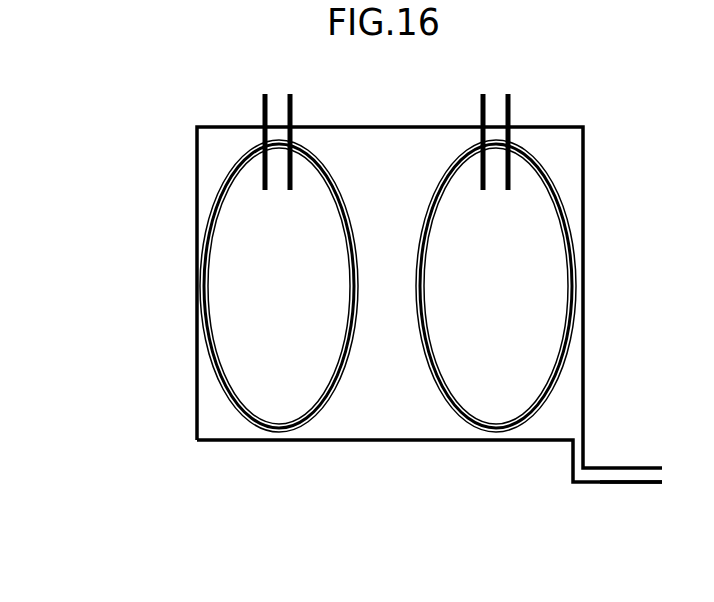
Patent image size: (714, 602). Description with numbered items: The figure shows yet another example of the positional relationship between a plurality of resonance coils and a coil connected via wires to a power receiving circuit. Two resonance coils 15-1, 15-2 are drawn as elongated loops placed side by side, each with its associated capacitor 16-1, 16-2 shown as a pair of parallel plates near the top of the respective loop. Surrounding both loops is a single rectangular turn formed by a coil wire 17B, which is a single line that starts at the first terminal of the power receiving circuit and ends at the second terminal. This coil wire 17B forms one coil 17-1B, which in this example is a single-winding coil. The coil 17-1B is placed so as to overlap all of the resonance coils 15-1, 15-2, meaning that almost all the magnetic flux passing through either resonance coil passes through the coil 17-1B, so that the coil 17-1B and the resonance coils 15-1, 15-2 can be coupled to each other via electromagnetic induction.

The coil 17-1B is at (175, 116).
The resonance coil 15-1 is at (337, 177).
The resonance coil 15-2 is at (552, 177).
The capacitor 16-1 is at (293, 110).
The capacitor 16-2 is at (513, 110).
The coil wire 17B is at (618, 484).